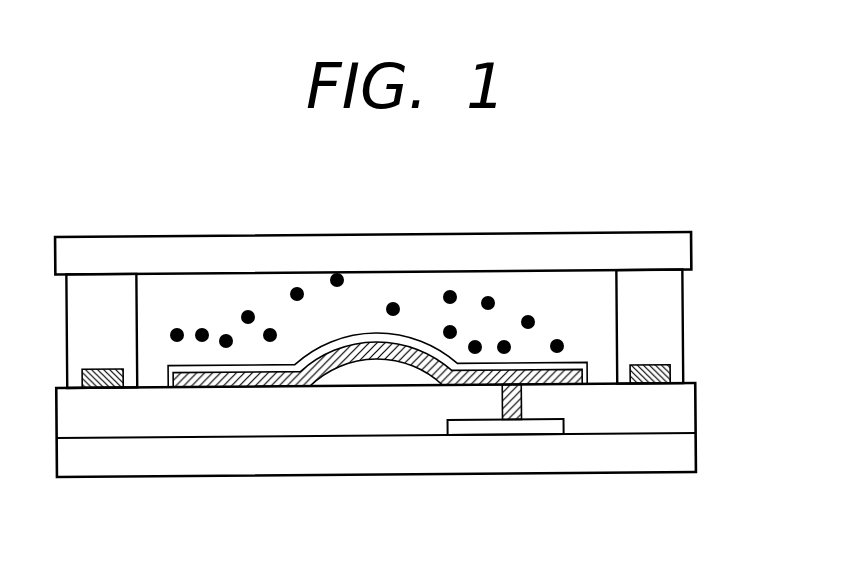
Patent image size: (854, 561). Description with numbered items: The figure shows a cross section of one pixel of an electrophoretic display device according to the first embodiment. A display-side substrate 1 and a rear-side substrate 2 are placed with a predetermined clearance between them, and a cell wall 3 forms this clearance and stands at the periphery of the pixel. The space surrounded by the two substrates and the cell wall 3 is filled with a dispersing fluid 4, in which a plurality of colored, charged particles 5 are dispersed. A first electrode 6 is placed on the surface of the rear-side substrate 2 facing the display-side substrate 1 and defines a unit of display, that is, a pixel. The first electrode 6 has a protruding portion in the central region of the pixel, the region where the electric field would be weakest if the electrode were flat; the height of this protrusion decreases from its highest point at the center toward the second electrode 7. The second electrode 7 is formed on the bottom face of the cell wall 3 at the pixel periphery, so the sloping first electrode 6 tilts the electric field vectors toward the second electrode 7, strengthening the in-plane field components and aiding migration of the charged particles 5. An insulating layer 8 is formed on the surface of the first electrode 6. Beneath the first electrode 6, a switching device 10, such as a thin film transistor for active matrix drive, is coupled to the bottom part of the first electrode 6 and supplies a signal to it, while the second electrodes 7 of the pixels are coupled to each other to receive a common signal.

The display-side substrate 1 is at (641, 249).
The rear-side substrate 2 is at (675, 453).
The cell wall 3 is at (650, 305).
The dispersing fluid 4 is at (531, 298).
The colored, charged particles 5 is at (453, 286).
The first electrode 6 is at (261, 372).
The second electrode 7 is at (105, 368).
The insulating layer 8 is at (215, 366).
The switching device 10 is at (478, 428).